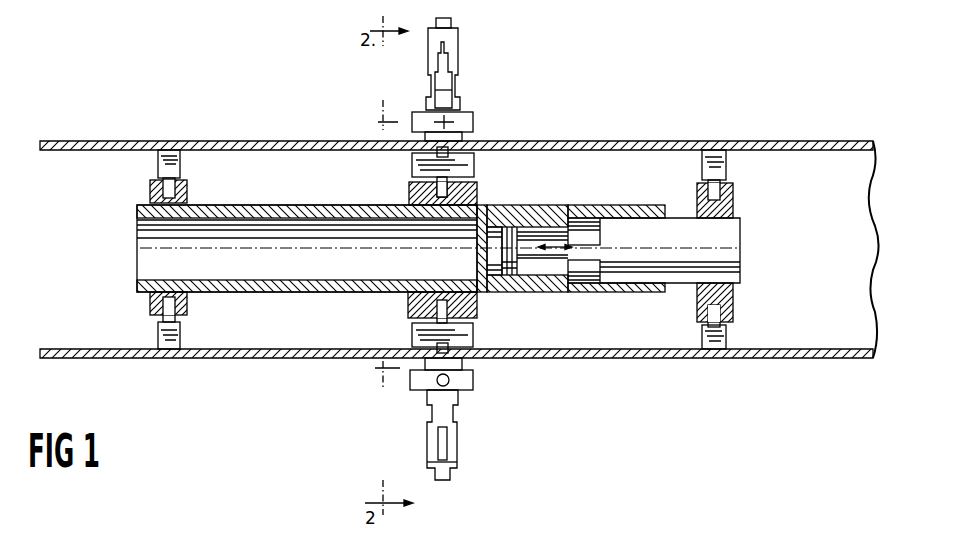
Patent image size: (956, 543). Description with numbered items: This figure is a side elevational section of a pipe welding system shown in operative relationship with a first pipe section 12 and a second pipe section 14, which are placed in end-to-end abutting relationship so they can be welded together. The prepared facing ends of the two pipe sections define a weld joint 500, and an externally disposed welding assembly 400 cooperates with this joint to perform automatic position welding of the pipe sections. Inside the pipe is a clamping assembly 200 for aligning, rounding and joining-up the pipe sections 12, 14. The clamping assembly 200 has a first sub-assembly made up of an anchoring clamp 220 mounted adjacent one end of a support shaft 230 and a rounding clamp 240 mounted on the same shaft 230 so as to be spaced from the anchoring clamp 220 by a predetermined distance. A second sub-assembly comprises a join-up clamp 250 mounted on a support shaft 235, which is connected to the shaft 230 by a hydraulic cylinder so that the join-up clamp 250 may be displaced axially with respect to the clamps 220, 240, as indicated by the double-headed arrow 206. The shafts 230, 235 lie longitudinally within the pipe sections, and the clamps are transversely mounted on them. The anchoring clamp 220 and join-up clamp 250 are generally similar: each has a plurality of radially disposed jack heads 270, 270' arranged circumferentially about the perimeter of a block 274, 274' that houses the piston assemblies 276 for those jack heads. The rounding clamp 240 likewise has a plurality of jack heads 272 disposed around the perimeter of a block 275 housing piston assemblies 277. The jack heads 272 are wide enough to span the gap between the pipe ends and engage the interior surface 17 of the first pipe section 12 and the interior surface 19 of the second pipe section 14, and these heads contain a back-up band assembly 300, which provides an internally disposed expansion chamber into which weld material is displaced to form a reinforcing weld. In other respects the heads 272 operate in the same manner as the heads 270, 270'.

The first pipe section 12 is at (247, 377).
The second pipe section 14 is at (622, 363).
The interior surface 17 is at (263, 152).
The interior surface 19 is at (626, 150).
The clamping assembly 200 is at (547, 195).
The double-headed arrow 206 is at (550, 250).
The anchoring clamp 220 is at (148, 167).
The support shaft 230 is at (137, 207).
The support shaft 235 is at (740, 255).
The rounding clamp 240 is at (356, 308).
The join-up clamp 250 is at (737, 200).
The jack heads 270 is at (198, 335).
The jack heads 270' is at (749, 337).
The jack heads 272 is at (474, 336).
The block 274 is at (194, 247).
The block 274' is at (746, 302).
The block 275 is at (478, 306).
The piston assemblies 276 is at (165, 308).
The piston assemblies 277 is at (438, 308).
The back-up band assembly 300 is at (453, 160).
The welding assembly 400 is at (477, 75).
The weld joint 500 is at (453, 141).